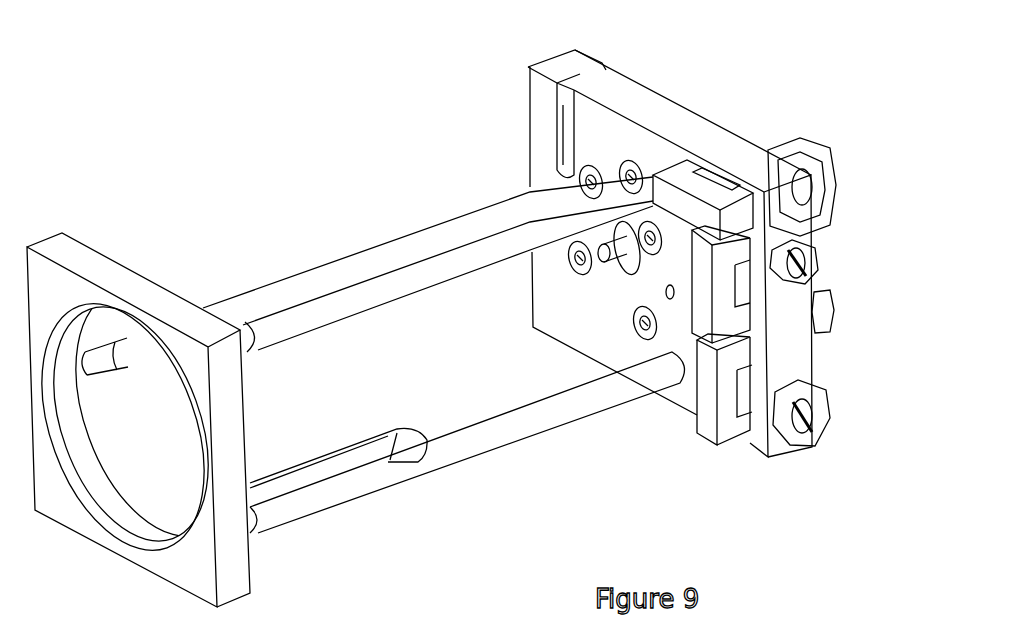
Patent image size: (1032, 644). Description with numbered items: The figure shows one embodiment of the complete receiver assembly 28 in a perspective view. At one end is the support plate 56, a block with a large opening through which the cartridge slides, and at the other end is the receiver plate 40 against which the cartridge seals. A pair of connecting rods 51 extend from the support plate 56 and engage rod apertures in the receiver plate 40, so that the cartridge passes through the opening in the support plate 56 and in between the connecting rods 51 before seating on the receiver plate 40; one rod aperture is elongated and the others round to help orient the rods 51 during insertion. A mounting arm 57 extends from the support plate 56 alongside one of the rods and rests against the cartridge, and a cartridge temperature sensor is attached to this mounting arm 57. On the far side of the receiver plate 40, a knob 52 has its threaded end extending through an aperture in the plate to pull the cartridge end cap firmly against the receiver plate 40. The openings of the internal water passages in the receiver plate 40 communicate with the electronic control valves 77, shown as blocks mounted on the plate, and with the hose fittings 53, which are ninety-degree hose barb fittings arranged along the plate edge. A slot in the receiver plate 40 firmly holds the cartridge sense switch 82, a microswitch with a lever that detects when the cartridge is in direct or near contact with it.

The receiver assembly 28 is at (572, 458).
The receiver plate 40 is at (687, 75).
The connecting rods 51 is at (350, 268).
The knob 52 is at (832, 152).
The hose fittings 53 is at (829, 258).
The support plate 56 is at (243, 595).
The mounting arm 57 is at (367, 458).
The electronic control valves 77 is at (733, 425).
The cartridge sense switch 82 is at (568, 88).